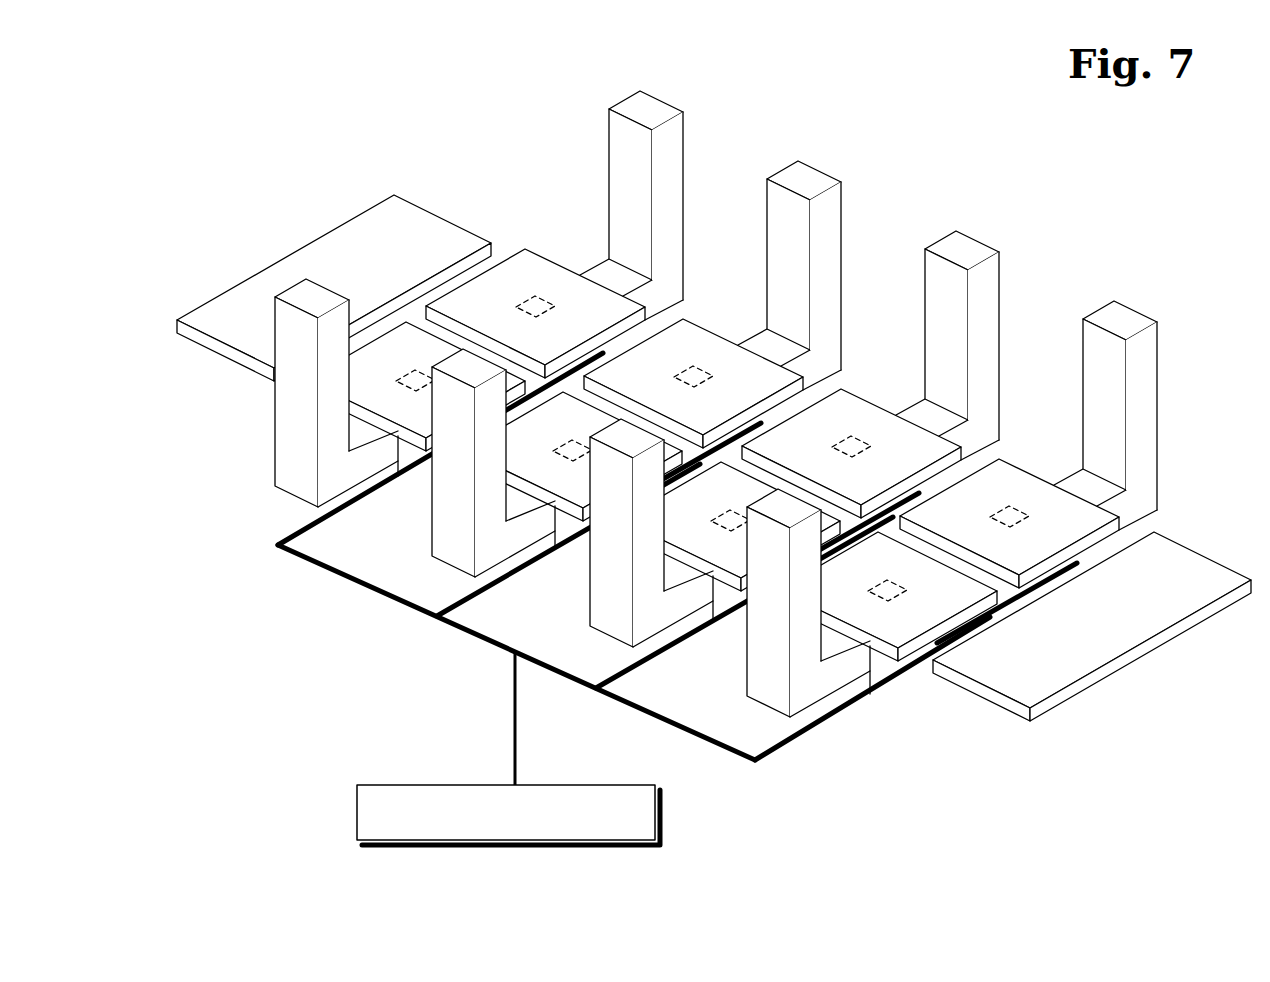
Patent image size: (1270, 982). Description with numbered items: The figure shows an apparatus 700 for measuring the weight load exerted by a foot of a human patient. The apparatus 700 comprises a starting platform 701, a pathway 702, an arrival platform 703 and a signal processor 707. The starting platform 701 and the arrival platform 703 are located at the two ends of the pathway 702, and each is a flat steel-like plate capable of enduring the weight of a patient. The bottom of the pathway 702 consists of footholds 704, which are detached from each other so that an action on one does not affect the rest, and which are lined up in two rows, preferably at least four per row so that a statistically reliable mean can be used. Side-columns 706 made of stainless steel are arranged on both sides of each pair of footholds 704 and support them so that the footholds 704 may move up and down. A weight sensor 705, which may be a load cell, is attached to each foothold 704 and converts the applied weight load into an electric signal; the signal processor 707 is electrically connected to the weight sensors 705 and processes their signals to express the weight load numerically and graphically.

The apparatus 700 is at (788, 49).
The starting platform 701 is at (1188, 565).
The pathway 702 is at (492, 136).
The arrival platform 703 is at (323, 253).
The footholds 704 is at (1020, 492).
The weight sensor 705 is at (855, 436).
The side-columns 706 is at (1131, 316).
The signal processor 707 is at (661, 812).